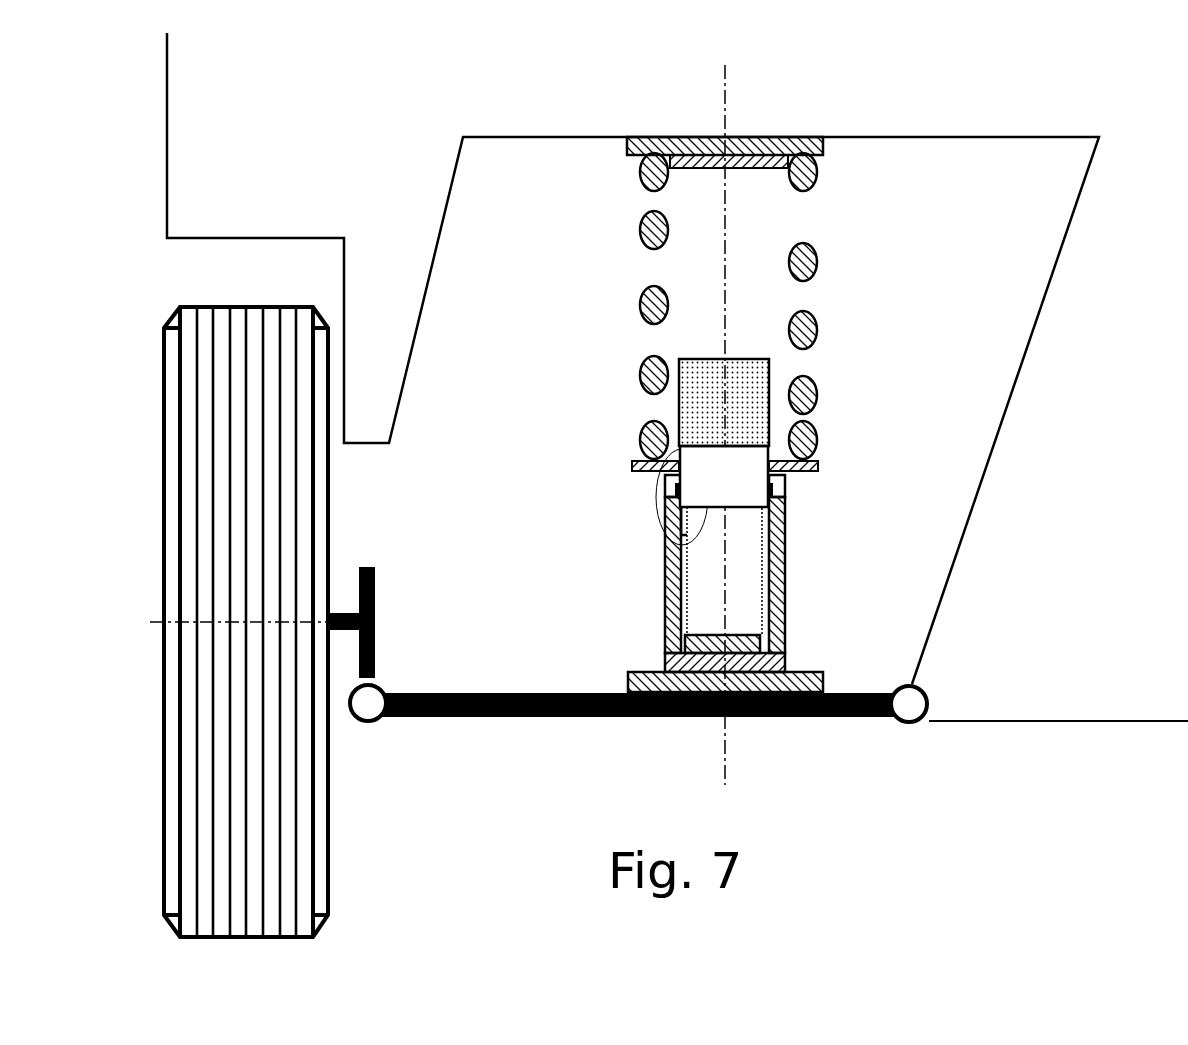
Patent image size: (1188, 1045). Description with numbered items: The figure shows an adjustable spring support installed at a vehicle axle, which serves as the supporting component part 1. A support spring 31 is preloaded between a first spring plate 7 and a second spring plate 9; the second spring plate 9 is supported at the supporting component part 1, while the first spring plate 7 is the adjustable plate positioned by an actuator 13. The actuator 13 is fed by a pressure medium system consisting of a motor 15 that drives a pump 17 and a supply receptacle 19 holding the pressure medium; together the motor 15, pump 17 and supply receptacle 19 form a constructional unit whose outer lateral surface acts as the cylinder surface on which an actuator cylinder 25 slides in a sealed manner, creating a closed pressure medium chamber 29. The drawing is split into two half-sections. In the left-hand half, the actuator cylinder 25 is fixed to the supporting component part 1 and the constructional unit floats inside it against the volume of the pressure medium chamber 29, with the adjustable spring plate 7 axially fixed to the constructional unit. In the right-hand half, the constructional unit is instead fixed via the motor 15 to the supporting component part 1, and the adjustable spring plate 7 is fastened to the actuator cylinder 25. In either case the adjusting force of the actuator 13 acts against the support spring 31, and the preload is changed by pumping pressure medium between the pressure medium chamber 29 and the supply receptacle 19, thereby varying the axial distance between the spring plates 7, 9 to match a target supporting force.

The supporting component part 1 is at (531, 742).
The first spring plate 7 is at (800, 465).
The second spring plate 9 is at (790, 148).
The actuator 13 is at (660, 480).
The motor 15 is at (735, 585).
The pump 17 is at (755, 497).
The supply receptacle 19 is at (740, 397).
The actuator cylinder 25 is at (775, 620).
The pressure medium chamber 29 is at (683, 530).
The support spring 31 is at (815, 262).